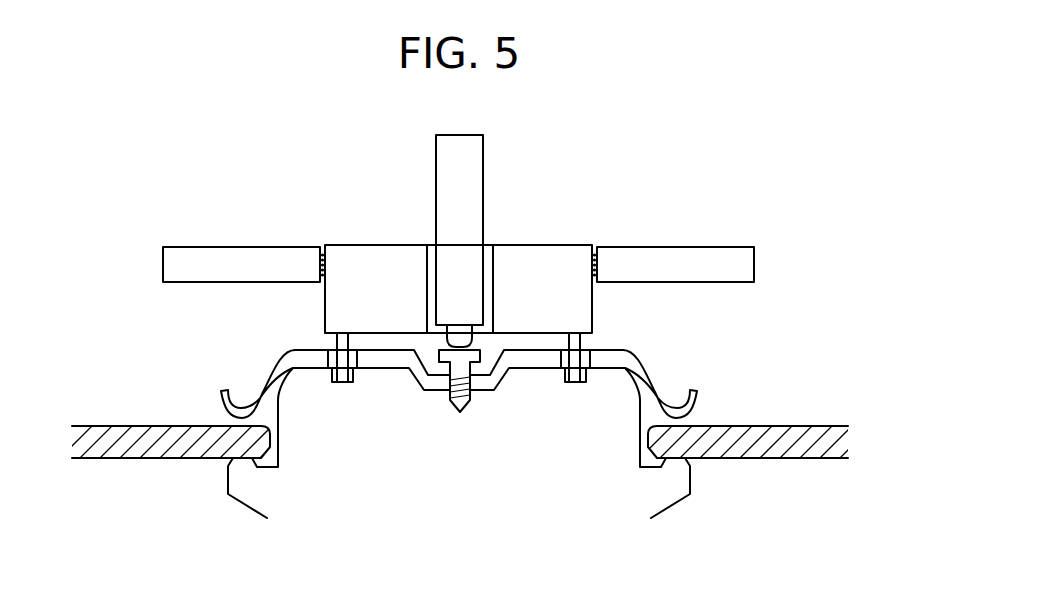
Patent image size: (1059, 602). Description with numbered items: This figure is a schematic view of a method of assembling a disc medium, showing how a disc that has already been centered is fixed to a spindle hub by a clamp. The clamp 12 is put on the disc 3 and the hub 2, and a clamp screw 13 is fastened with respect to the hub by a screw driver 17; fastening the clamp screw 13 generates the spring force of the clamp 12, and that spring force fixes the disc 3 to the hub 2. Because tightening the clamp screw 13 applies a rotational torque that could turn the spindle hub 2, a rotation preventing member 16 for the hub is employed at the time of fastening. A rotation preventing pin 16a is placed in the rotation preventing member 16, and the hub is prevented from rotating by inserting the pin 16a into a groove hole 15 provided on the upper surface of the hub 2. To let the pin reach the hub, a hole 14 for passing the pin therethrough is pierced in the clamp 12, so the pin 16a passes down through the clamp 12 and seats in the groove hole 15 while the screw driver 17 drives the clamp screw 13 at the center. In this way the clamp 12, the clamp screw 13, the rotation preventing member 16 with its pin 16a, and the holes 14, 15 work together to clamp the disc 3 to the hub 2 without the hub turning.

The hub 2 is at (508, 482).
The disc 3 is at (133, 432).
The clamp 12 is at (262, 387).
The clamp screw 13 is at (460, 412).
The hole 14 is at (353, 358).
The groove hole 15 is at (340, 384).
The rotation preventing member 16 is at (518, 252).
The rotation preventing pin 16a is at (338, 343).
The screw driver 17 is at (468, 160).